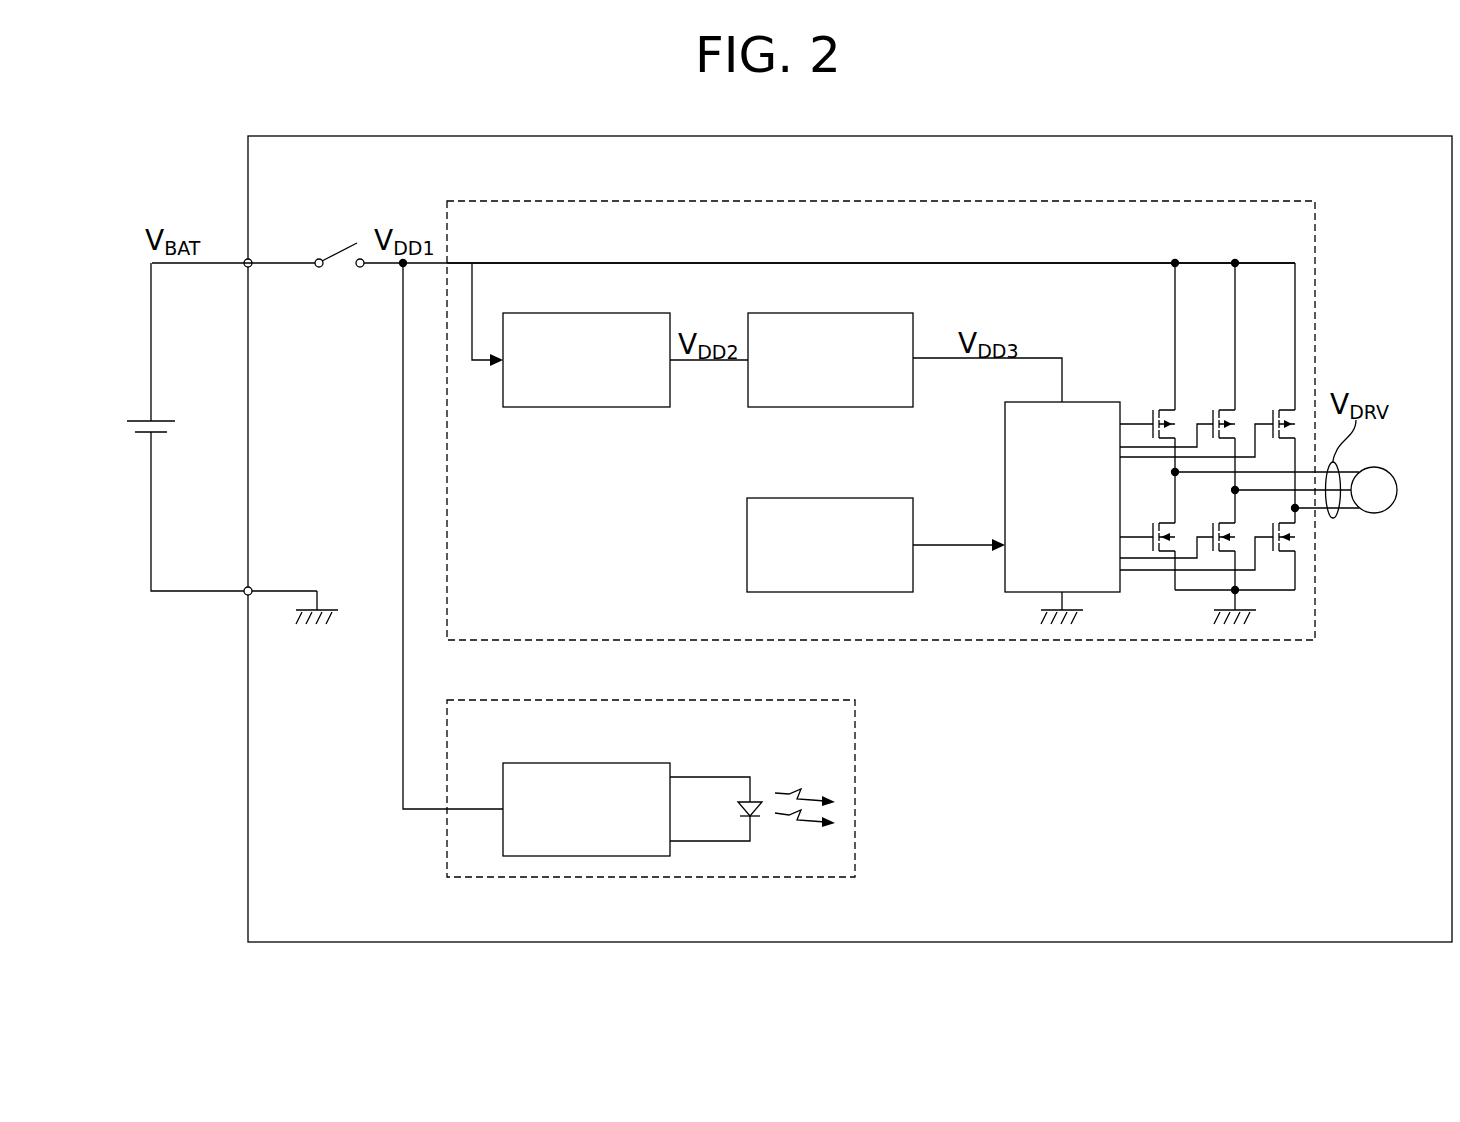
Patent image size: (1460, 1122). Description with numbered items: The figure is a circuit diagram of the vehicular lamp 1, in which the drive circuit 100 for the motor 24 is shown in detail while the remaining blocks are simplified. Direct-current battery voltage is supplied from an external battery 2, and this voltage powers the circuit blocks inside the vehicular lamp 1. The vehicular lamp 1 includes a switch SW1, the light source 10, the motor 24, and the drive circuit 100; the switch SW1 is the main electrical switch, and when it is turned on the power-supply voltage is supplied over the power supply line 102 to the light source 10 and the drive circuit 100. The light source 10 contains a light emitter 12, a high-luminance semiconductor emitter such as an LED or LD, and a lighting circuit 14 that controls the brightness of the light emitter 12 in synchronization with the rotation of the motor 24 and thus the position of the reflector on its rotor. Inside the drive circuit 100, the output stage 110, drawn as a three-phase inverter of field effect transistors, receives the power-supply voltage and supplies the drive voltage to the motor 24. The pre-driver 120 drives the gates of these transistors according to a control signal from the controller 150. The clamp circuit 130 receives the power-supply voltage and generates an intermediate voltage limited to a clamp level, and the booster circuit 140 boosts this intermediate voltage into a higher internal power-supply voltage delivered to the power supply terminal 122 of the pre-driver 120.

The vehicular lamp 1 is at (1143, 132).
The battery 2 is at (133, 431).
The light source 10 is at (808, 701).
The light emitter 12 is at (752, 800).
The lighting circuit 14 is at (626, 764).
The motor 24 is at (1375, 467).
The drive circuit 100 is at (1265, 202).
The power supply line 102 is at (745, 251).
The output stage 110 is at (1158, 357).
The pre-driver 120 is at (1095, 402).
The power supply terminal 122 is at (1069, 392).
The clamp circuit 130 is at (614, 314).
The booster circuit 140 is at (859, 314).
The controller 150 is at (861, 498).
The switch SW1 is at (346, 244).